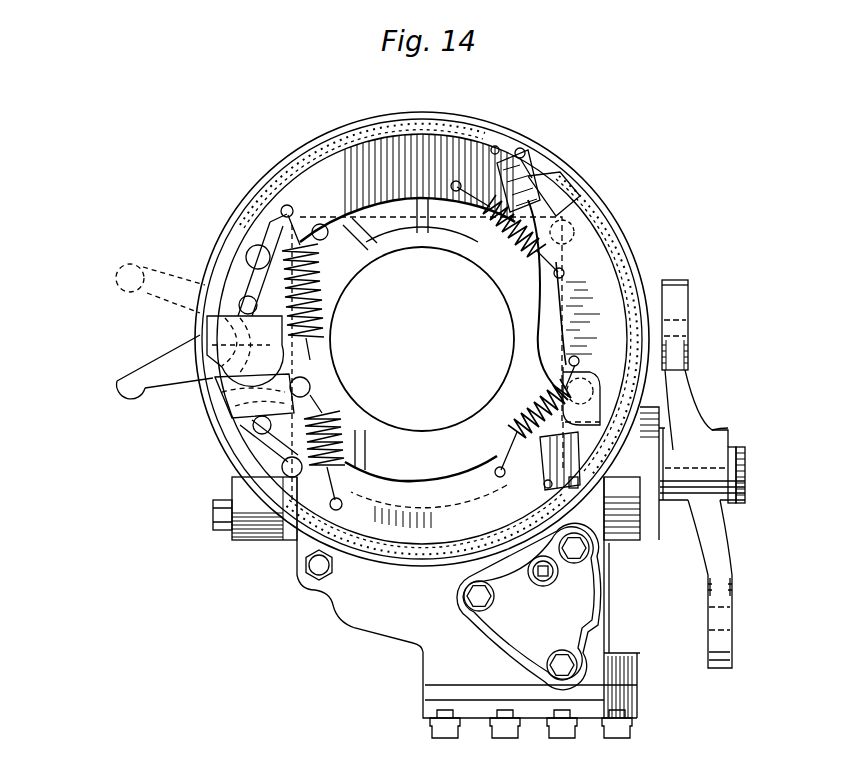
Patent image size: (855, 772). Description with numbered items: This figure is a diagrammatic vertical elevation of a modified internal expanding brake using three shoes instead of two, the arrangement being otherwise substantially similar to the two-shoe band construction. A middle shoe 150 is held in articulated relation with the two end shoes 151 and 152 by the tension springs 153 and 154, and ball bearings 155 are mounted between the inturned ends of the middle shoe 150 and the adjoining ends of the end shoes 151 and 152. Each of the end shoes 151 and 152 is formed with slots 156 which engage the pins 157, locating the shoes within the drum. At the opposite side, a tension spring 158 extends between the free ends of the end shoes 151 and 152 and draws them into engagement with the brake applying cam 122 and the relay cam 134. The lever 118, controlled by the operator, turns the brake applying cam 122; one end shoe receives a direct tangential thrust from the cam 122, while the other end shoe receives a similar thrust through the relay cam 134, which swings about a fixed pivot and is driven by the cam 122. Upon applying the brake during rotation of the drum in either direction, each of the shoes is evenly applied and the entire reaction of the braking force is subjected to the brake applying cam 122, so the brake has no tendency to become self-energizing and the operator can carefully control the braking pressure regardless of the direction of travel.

The lever 118 is at (128, 400).
The brake applying cam 122 is at (222, 345).
The relay cam 134 is at (243, 382).
The middle shoe 150 is at (590, 315).
The end shoe 151 is at (375, 235).
The end shoe 152 is at (437, 490).
The tension spring 153 is at (503, 253).
The tension spring 154 is at (546, 392).
The ball bearings 155 is at (553, 184).
The slots 156 is at (544, 484).
The pins 157 is at (588, 486).
The tension spring 158 is at (310, 352).